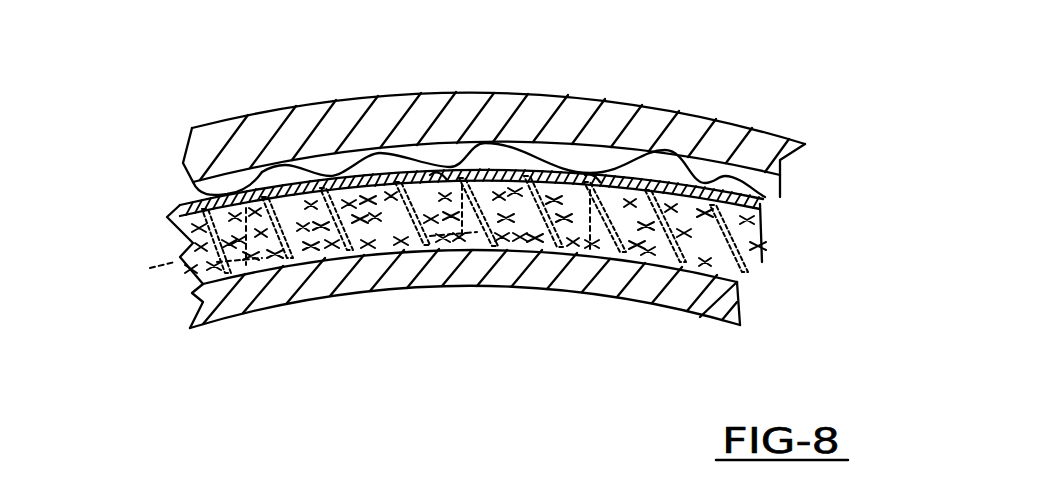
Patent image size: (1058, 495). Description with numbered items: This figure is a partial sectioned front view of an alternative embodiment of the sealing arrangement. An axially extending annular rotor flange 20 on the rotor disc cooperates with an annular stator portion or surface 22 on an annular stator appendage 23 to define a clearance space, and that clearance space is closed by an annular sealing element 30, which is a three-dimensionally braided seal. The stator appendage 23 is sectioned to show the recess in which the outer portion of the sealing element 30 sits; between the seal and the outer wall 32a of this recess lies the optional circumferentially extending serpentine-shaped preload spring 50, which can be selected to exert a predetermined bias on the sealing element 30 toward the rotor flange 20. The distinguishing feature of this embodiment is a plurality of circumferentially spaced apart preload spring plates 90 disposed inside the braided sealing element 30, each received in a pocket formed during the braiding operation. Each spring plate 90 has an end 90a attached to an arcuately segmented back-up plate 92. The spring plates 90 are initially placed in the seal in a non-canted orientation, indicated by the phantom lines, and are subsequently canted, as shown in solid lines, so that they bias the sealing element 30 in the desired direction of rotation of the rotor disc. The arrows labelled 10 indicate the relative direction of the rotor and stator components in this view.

The direction of applied pressure 10 is at (137, 200).
The annular rotor flange 20 is at (690, 292).
The annular stator portion or surface 22 is at (172, 268).
The annular stator appendage 23 is at (830, 103).
The annular sealing element 30 is at (764, 268).
The outer wall of the recess 32a is at (776, 195).
The serpentine-shaped preload spring 50 is at (371, 75).
The preload spring plate 90 is at (270, 240).
The end of spring plate 90a is at (430, 175).
The arcuately segmented back-up plate 92 is at (263, 172).